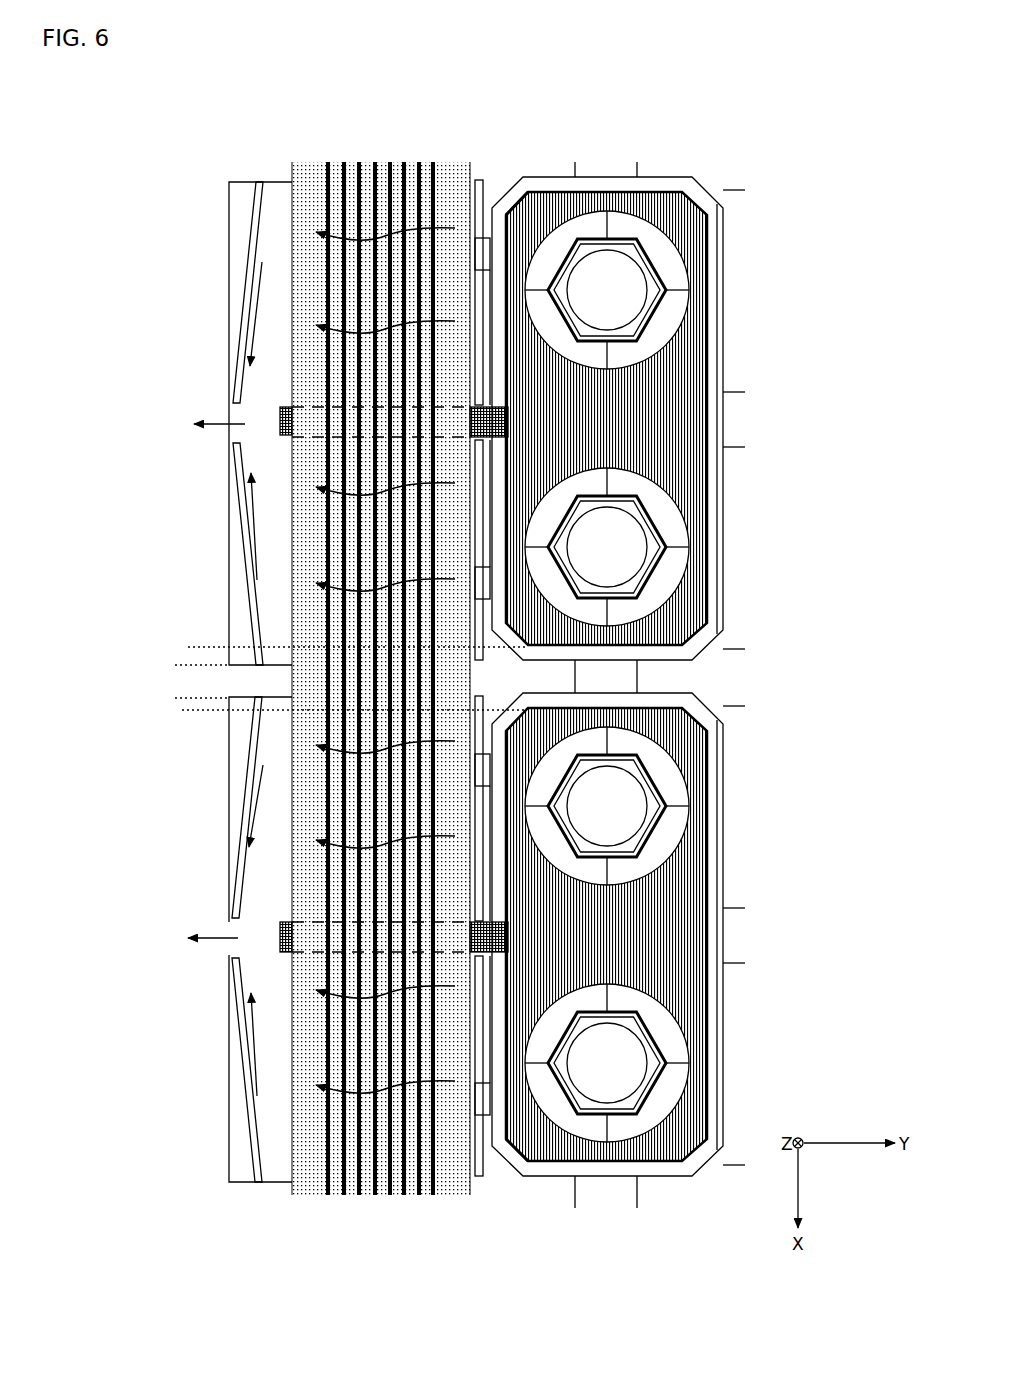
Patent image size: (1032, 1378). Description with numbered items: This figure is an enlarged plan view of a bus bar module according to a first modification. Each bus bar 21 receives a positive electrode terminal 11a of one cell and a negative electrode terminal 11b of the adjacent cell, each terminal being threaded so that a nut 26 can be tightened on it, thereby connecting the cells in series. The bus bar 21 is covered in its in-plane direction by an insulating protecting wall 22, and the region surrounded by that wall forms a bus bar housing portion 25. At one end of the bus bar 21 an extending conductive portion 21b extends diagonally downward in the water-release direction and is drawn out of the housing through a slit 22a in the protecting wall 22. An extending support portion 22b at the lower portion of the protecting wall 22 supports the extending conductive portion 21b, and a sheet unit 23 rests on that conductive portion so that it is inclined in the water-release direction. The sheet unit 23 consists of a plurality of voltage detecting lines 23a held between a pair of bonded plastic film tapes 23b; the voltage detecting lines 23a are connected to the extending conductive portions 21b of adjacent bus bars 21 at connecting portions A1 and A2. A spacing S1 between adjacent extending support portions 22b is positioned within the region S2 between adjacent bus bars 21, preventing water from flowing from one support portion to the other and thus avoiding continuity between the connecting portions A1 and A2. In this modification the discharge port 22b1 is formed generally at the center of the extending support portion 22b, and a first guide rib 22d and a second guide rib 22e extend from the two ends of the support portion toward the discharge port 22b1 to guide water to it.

The bus bar 21 is at (665, 410).
The extending conductive portion 21b is at (488, 420).
The protecting wall 22 is at (665, 676).
The slit 22a is at (494, 397).
The extending support portion 22b is at (192, 686).
The discharge port 22b1 is at (228, 412).
The first guide rib 22d is at (245, 300).
The second guide rib 22e is at (243, 518).
The sheet unit 23 is at (382, 626).
The voltage detecting lines 23a is at (382, 205).
The plastic film tapes 23b is at (310, 200).
The bus bar housing portion 25 is at (519, 210).
The nut 26 is at (657, 263).
The positive electrode terminal 11a is at (603, 553).
The negative electrode terminal 11b is at (598, 292).
The connecting portion A1 is at (343, 415).
The connecting portion A2 is at (385, 935).
The spacing S1 is at (190, 666).
The region S2 is at (567, 661).